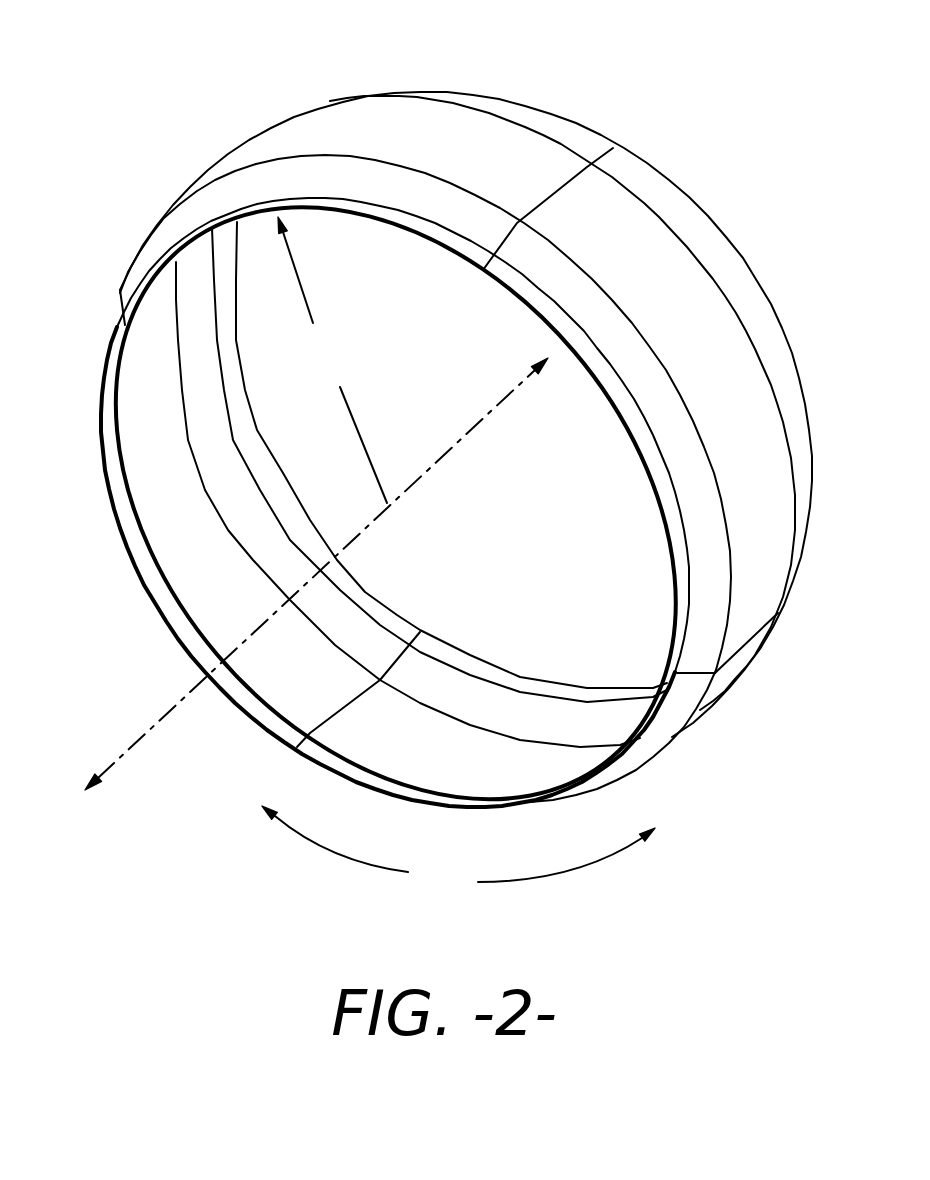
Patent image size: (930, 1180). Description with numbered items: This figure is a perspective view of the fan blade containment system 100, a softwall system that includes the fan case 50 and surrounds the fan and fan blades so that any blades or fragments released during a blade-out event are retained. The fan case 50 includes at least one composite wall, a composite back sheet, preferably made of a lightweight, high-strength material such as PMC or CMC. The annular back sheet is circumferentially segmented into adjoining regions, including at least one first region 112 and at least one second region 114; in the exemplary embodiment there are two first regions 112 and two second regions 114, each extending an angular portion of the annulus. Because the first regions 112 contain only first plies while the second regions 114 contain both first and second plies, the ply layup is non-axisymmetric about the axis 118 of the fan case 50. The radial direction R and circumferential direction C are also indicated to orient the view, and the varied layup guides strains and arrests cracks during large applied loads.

The fan blade containment system 100 is at (151, 98).
The fan case 50 is at (308, 132).
The second region 114 is at (438, 130).
The first region 112 is at (720, 340).
The axis 118 is at (152, 722).
The radial direction R is at (332, 360).
The circumferential direction C is at (458, 852).